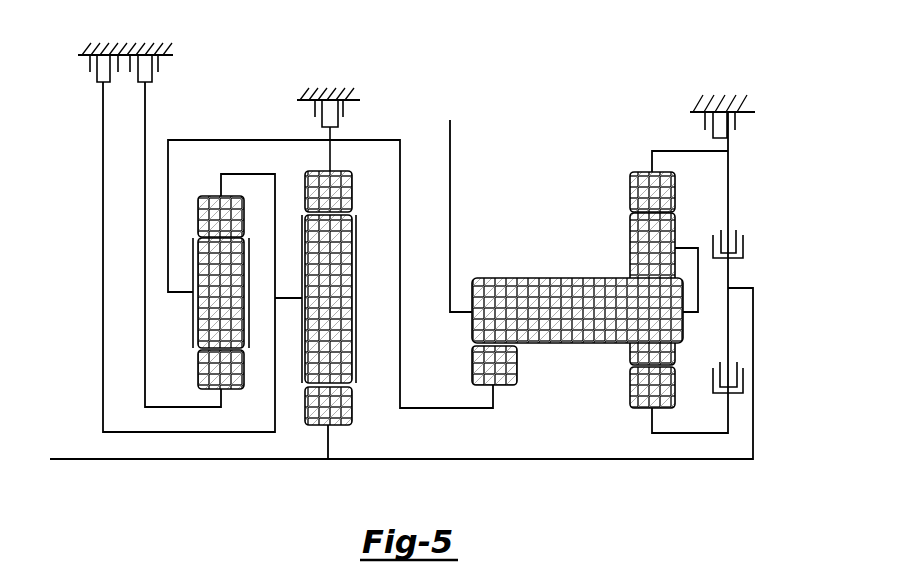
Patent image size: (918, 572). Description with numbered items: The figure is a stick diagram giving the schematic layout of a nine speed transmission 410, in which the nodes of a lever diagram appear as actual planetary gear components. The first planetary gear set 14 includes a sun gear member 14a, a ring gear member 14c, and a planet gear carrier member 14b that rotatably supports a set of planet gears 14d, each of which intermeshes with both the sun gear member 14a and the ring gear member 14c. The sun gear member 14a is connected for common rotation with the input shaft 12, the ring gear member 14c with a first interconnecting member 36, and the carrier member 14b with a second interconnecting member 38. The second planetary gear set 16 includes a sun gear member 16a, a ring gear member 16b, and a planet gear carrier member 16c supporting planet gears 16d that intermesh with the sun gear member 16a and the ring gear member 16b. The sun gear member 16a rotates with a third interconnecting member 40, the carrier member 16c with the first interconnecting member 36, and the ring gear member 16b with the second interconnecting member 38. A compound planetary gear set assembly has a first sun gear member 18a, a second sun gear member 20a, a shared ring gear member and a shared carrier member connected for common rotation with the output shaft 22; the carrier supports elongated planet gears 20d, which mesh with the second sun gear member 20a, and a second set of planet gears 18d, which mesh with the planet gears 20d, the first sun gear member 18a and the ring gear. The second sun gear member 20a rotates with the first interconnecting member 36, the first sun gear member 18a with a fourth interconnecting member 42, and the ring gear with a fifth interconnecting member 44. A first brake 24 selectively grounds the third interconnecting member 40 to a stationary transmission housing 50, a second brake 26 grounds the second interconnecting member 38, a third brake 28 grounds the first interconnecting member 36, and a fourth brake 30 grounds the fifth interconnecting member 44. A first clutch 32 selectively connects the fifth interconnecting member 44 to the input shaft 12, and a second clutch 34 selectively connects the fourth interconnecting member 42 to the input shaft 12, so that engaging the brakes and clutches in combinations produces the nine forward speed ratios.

The input member or shaft 12 is at (101, 460).
The first planetary gear set 14 is at (310, 445).
The sun gear member 14a is at (321, 420).
The planet gear carrier member 14b is at (357, 316).
The ring gear member 14c is at (321, 202).
The planet gears 14d is at (321, 310).
The second planetary gear set 16 is at (238, 410).
The sun gear member 16a is at (213, 383).
The ring gear member 16b is at (192, 306).
The planet gear carrier member 16c is at (213, 229).
The planet gears 16d is at (213, 305).
The first sun gear member 18a is at (644, 397).
The second set of planet gears 18d is at (644, 262).
The second sun gear member 20a is at (486, 382).
The first set of planet gears 20d is at (570, 325).
The output shaft or member 22 is at (451, 155).
The first brake 24 is at (159, 69).
The second brake 26 is at (89, 69).
The third brake 28 is at (314, 113).
The fourth brake 30 is at (737, 125).
The first clutch 32 is at (744, 245).
The second clutch 34 is at (744, 378).
The first shaft or interconnecting member 36 is at (400, 139).
The second shaft or interconnecting member 38 is at (248, 173).
The third shaft or interconnecting member 40 is at (144, 303).
The fourth shaft or interconnecting member 42 is at (690, 434).
The fifth shaft or interconnecting member 44 is at (729, 180).
The stationary member or transmission housing 50 is at (174, 48).
The nine speed transmission 410 is at (585, 58).